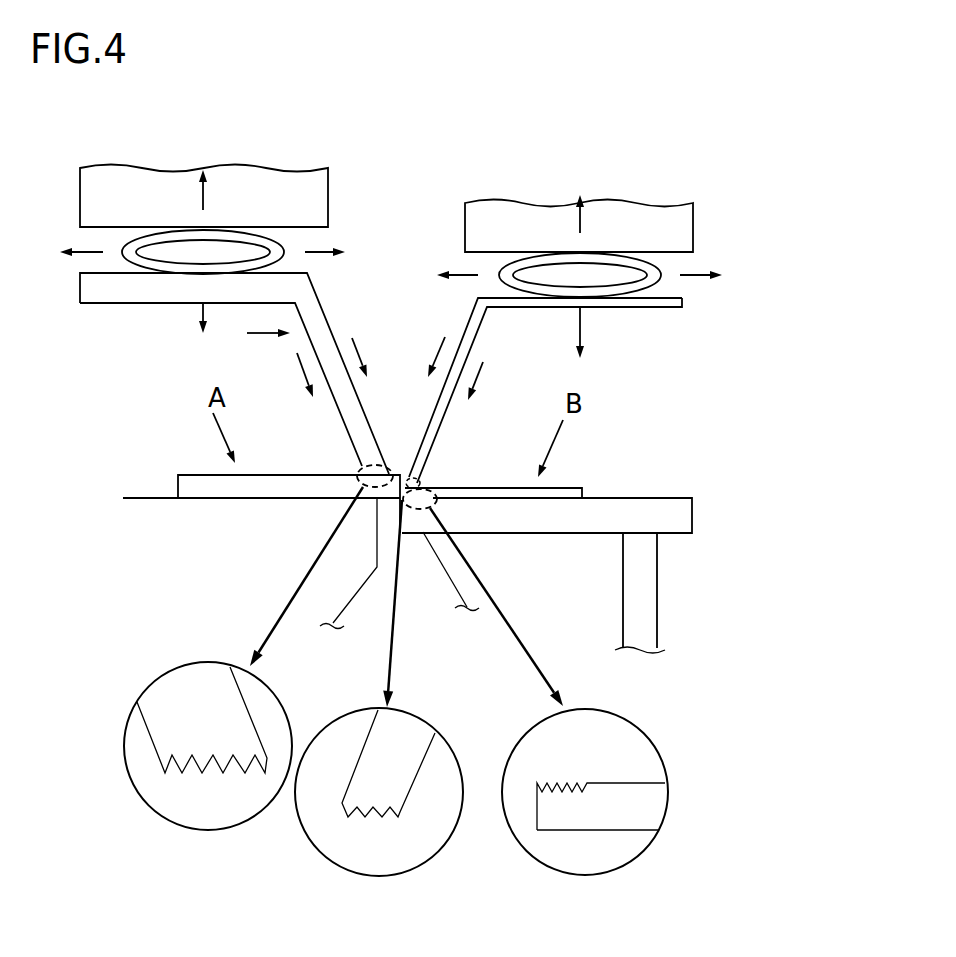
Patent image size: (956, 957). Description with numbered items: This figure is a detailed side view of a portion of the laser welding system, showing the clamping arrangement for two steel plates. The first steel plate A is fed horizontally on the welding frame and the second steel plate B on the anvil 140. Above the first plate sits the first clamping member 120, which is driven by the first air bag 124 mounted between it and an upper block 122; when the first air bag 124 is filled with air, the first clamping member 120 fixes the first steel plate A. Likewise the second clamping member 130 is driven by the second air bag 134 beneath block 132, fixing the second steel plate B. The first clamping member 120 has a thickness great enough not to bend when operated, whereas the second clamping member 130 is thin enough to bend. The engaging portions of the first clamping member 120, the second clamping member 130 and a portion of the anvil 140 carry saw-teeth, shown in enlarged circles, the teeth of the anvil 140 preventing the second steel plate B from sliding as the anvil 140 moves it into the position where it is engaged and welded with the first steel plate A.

The first clamping member 120 is at (153, 673).
The first transducer block 122 is at (168, 175).
The first air bag 124 is at (235, 233).
The second clamping member 130 is at (660, 305).
The second transducer block 132 is at (632, 207).
The second air bag 134 is at (550, 257).
The anvil 140 is at (645, 730).